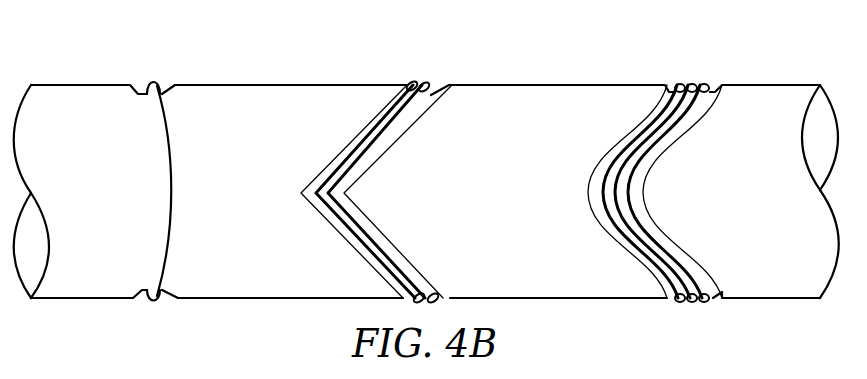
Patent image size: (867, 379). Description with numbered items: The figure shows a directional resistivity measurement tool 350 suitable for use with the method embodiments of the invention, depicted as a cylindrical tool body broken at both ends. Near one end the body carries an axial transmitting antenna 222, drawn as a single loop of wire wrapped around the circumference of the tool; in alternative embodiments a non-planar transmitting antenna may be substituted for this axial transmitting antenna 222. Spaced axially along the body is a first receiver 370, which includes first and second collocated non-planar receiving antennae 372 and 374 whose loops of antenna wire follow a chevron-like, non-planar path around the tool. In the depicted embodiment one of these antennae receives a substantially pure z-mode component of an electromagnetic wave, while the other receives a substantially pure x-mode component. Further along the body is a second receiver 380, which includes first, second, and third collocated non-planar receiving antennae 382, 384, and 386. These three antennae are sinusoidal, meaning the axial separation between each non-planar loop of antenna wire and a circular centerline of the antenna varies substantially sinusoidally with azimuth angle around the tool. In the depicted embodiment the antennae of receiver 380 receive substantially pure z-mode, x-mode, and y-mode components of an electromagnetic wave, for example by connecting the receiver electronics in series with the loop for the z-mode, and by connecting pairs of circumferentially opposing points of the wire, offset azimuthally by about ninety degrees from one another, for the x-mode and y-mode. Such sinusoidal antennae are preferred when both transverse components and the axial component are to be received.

The measurement tool 350 is at (275, 82).
The axial transmitting antenna 222 is at (172, 193).
The first receiver 370 is at (376, 152).
The second non-planar receiving antenna 374 is at (367, 138).
The first non-planar receiving antenna 372 is at (370, 230).
The second receiver 380 is at (643, 151).
The first sinusoidal receiving antenna 382 is at (647, 140).
The second sinusoidal receiving antenna 384 is at (613, 203).
The third sinusoidal receiving antenna 386 is at (660, 230).